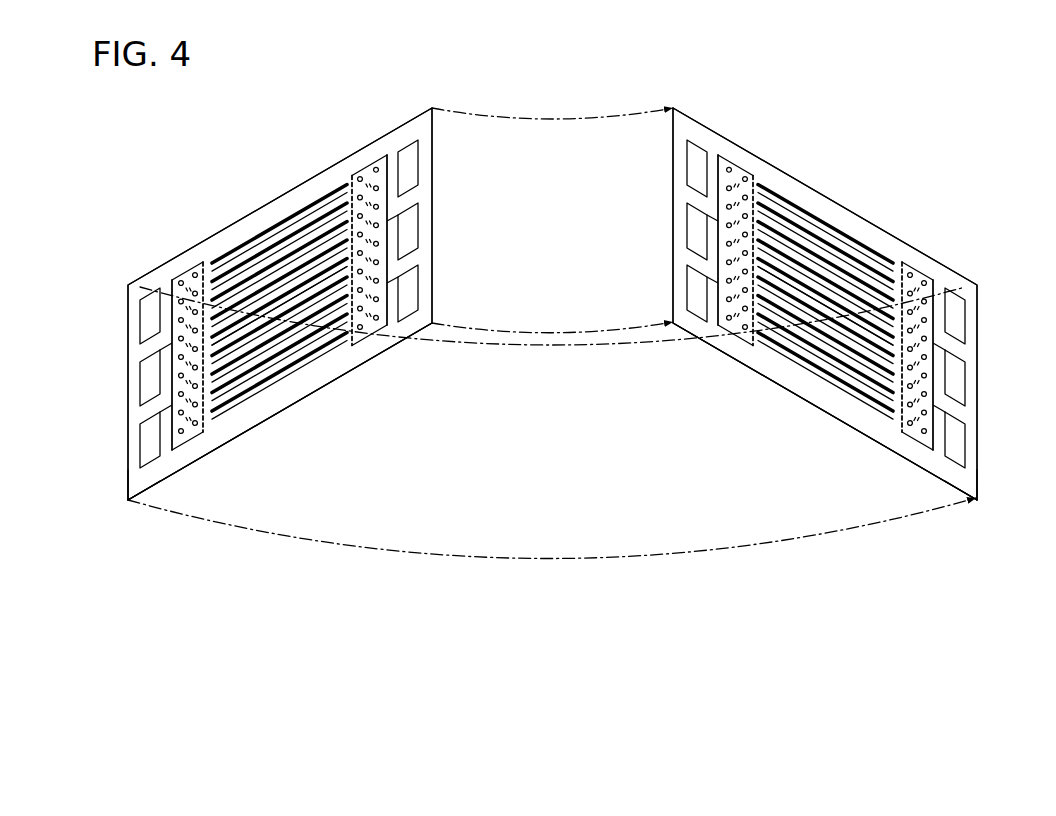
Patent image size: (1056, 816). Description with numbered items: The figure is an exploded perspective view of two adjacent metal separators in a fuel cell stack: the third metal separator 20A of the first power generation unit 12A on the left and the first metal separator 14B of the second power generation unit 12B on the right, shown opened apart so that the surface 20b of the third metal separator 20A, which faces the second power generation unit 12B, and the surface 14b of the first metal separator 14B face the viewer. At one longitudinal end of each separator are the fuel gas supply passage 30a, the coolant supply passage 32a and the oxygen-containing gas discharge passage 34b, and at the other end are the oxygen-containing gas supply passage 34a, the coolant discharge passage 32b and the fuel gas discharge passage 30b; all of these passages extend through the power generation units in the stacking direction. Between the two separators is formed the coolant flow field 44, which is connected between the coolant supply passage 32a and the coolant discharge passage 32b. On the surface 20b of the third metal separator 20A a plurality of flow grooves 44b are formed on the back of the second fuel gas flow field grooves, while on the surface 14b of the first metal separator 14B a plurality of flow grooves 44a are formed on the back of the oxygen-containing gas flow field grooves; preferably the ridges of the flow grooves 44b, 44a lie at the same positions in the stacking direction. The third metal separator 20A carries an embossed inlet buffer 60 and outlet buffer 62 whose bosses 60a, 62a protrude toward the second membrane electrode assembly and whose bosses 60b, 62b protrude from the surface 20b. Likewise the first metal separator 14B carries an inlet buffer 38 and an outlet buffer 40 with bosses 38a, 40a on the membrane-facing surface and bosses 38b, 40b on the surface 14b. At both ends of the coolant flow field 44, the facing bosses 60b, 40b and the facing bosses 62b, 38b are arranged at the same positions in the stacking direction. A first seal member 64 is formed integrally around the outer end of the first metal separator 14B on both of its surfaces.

The third metal separator 20A is at (434, 107).
The first power generation unit 12A is at (328, 288).
The first metal separator 14B is at (671, 107).
The second power generation unit 12B is at (779, 288).
The fuel gas supply passage 30a is at (410, 155).
The coolant supply passage 32a is at (410, 213).
The oxygen-containing gas discharge passage 34b is at (412, 281).
The oxygen-containing gas supply passage 34a is at (142, 303).
The coolant discharge passage 32b is at (147, 389).
The fuel gas discharge passage 30b is at (147, 433).
The surface 20b is at (127, 491).
The surface 14b is at (978, 491).
The first seal member 64 is at (167, 479).
The coolant flow field 44 is at (322, 338).
The flow grooves 44a is at (845, 373).
The flow grooves 44b is at (260, 373).
The inlet buffer 60 is at (356, 90).
The bosses 60a is at (380, 160).
The bosses 60b is at (357, 190).
The outlet buffer 62 is at (167, 210).
The bosses 62a is at (200, 265).
The bosses 62b is at (173, 305).
The outlet buffer 40 is at (799, 128).
The bosses 40a is at (725, 160).
The bosses 40b is at (748, 190).
The inlet buffer 38 is at (998, 247).
The bosses 38a is at (905, 265).
The bosses 38b is at (932, 305).